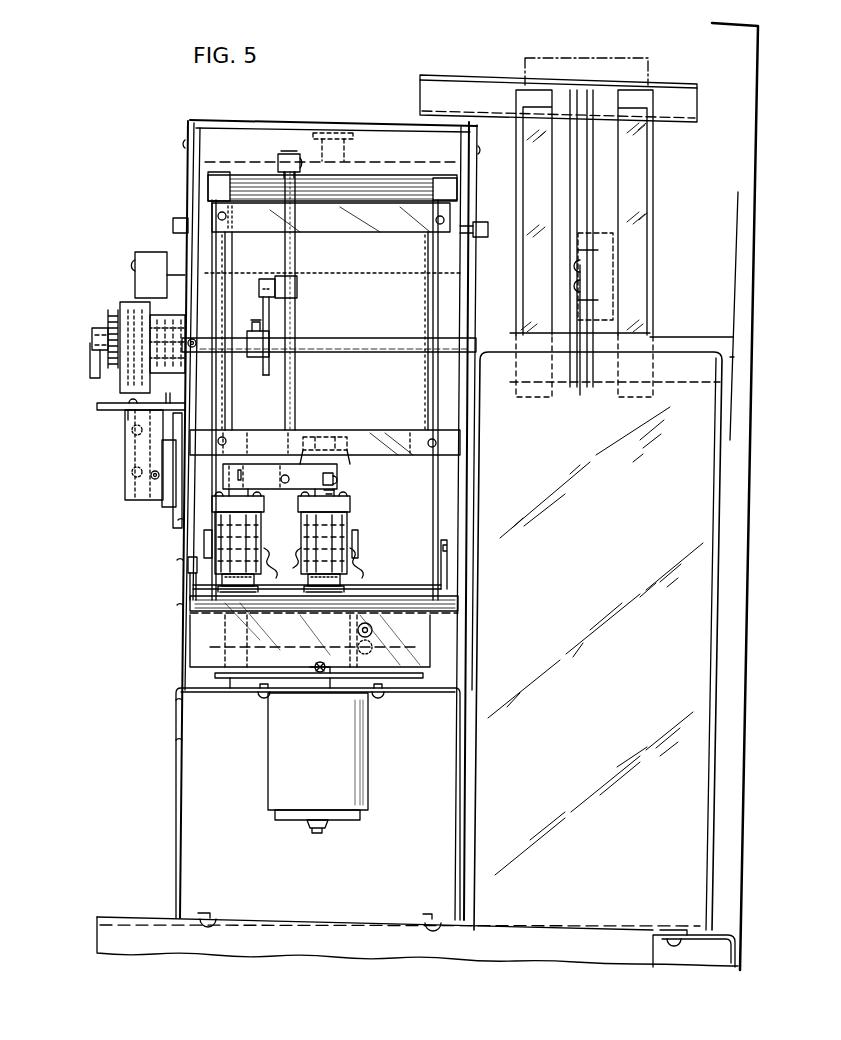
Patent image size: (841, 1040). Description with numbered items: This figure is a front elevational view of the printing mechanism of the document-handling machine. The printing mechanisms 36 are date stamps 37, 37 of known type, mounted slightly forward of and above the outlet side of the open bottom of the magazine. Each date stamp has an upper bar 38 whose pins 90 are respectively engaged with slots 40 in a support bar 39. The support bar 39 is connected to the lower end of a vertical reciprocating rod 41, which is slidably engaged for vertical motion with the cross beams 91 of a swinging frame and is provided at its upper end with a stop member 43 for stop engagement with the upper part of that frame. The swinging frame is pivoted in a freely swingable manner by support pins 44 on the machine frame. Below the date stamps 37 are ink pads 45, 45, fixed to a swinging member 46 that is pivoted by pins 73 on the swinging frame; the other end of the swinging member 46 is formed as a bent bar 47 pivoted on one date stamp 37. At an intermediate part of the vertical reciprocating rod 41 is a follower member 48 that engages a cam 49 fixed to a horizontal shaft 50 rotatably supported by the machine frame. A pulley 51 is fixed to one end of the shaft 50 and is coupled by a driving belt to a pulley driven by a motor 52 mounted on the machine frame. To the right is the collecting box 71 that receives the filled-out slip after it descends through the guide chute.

The printing mechanisms 36 is at (262, 532).
The date stamps 37 is at (245, 556).
The upper bars 38 is at (334, 496).
The support bar 39 is at (307, 477).
The slots 40 is at (333, 477).
The vertical reciprocating rod 41 is at (295, 322).
The stop member 43 is at (280, 160).
The support pins 44 is at (468, 228).
The ink pads 45 is at (344, 555).
The swinging member 46 is at (400, 586).
The bent bar 47 is at (192, 563).
The follower member 48 is at (268, 280).
The cam 49 is at (264, 318).
The horizontal shaft 50 is at (366, 342).
The pulley 51 is at (165, 322).
The motor 52 is at (147, 506).
The collecting box 71 is at (598, 641).
The pins 73 is at (443, 545).
The pins 90 is at (334, 479).
The cross beams 91 is at (375, 232).